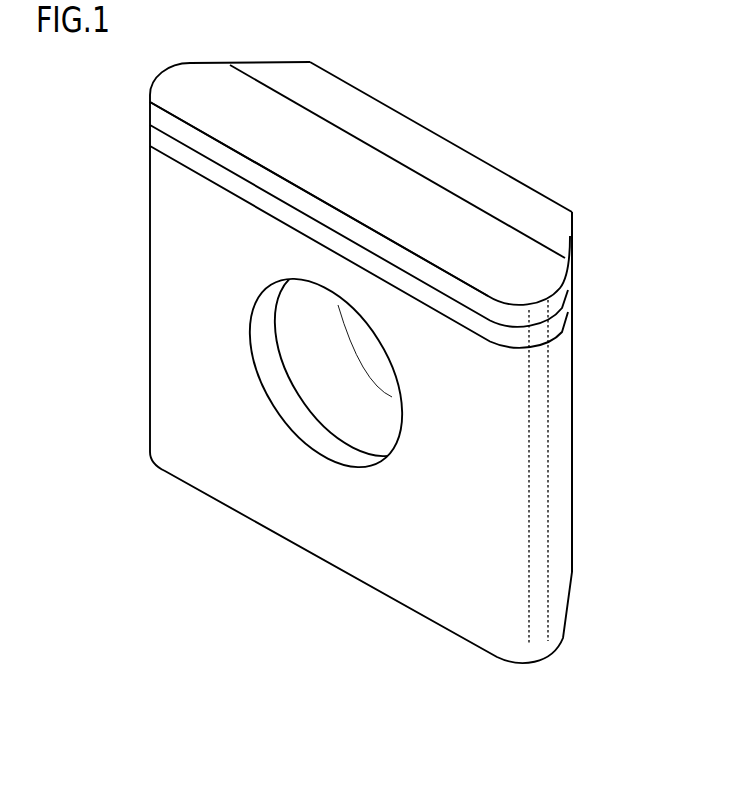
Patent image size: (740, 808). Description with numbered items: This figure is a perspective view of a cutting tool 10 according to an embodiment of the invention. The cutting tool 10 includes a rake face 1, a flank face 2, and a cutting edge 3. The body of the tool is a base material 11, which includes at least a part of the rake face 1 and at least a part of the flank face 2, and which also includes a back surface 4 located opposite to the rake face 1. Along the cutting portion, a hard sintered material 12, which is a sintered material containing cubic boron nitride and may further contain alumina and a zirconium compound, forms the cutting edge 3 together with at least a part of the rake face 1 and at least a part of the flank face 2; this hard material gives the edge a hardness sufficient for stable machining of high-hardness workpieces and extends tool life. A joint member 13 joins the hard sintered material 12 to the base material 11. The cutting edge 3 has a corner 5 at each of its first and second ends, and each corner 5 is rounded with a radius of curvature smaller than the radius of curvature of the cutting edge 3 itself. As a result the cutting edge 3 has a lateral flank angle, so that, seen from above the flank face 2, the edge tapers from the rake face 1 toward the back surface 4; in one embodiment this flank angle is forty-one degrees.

The rake face 1 is at (467, 473).
The flank face 2 is at (367, 197).
The cutting edge 3 is at (185, 122).
The back surface 4 is at (510, 176).
The corner 5 is at (121, 100).
The cutting tool 10 is at (486, 116).
The base material 11 is at (558, 458).
The hard sintered material 12 is at (552, 306).
The joint member 13 is at (552, 328).